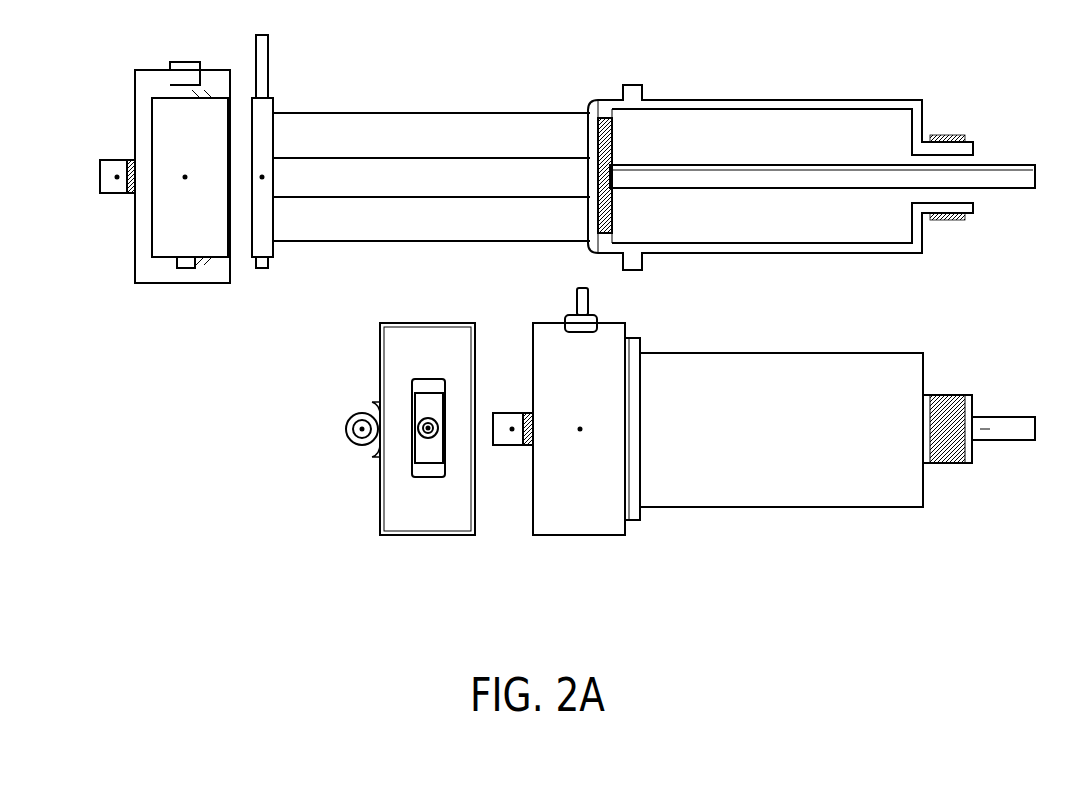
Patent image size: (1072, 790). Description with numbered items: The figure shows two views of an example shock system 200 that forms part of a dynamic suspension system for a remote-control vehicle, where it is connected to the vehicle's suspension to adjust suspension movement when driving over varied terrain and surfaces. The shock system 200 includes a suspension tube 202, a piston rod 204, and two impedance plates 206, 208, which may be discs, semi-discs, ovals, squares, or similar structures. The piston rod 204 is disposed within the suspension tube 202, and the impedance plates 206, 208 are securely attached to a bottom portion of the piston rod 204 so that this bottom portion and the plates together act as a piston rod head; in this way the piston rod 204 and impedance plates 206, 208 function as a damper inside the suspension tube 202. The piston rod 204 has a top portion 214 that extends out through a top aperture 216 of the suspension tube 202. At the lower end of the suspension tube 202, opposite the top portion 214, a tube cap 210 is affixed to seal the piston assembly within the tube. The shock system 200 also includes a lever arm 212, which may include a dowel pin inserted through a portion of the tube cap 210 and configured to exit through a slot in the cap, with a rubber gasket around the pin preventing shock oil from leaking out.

The shock system 200 is at (314, 287).
The suspension tube 202 is at (688, 256).
The piston rod 204 is at (790, 165).
The impedance plate 206 is at (605, 155).
The impedance plate 208 is at (593, 150).
The tube cap 210 is at (150, 72).
The lever arm 212 is at (428, 440).
The top portion 214 is at (995, 202).
The top aperture 216 is at (983, 150).